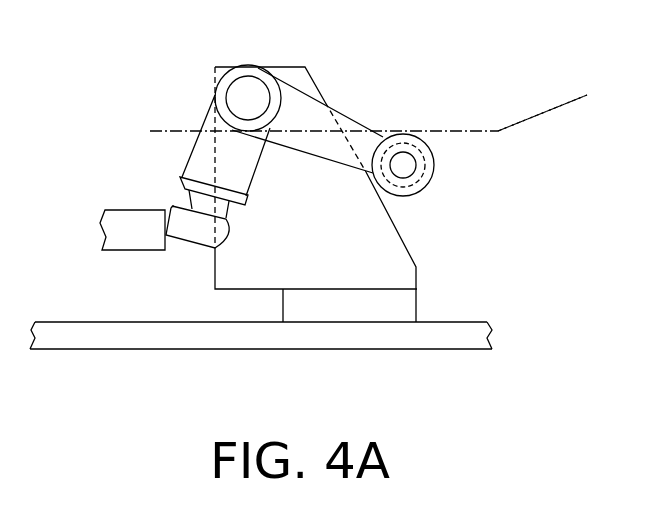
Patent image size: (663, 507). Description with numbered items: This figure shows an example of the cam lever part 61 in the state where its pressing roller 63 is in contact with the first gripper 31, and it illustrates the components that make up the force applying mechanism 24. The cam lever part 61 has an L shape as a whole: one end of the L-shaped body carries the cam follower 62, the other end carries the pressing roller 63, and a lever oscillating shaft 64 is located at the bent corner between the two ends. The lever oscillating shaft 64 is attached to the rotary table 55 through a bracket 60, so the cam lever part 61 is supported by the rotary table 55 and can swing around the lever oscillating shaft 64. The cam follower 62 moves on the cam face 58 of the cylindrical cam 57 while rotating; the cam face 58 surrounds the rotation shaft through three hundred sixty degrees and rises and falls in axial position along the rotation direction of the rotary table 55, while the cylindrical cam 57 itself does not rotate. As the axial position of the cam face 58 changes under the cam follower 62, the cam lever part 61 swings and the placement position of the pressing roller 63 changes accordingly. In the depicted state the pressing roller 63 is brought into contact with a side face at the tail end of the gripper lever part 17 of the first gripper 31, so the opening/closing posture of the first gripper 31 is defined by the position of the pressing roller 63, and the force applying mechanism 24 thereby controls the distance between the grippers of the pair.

The rotary table 55 is at (237, 340).
The cylindrical cam 57 is at (502, 97).
The cam face 58 is at (530, 122).
The bracket 60 is at (382, 240).
The cam lever part 61 is at (343, 108).
The force applying mechanism 24 is at (361, 109).
The cam follower 62 is at (430, 166).
The pressing roller 63 is at (193, 230).
The lever oscillating shaft 64 is at (250, 95).
The first gripper 31 is at (128, 203).
The gripper lever part 17 is at (137, 227).